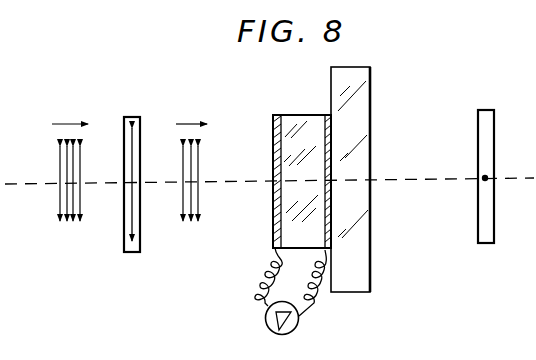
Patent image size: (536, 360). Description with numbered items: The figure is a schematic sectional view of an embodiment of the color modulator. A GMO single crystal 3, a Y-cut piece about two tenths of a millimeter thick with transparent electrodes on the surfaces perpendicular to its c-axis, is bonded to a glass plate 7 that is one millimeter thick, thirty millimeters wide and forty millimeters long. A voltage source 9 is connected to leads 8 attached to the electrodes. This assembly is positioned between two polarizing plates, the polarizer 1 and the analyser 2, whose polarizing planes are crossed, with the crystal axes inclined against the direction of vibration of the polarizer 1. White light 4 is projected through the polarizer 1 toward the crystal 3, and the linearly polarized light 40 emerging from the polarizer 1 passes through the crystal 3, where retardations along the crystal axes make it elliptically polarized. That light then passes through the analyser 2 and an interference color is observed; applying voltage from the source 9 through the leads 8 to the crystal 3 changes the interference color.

The white light 4 is at (70, 152).
The polarizing plate 1 is at (132, 117).
The linearly polarized light 40 is at (191, 152).
The GMO single crystal 3 is at (300, 118).
The glass plate 7 is at (350, 289).
The leads 8 is at (258, 283).
The voltage source 9 is at (267, 332).
The analyser 2 is at (481, 110).